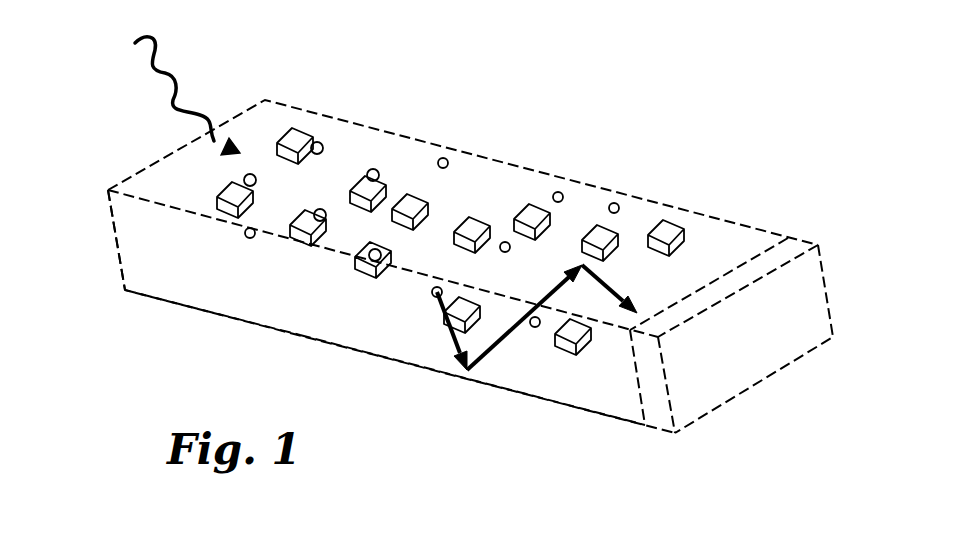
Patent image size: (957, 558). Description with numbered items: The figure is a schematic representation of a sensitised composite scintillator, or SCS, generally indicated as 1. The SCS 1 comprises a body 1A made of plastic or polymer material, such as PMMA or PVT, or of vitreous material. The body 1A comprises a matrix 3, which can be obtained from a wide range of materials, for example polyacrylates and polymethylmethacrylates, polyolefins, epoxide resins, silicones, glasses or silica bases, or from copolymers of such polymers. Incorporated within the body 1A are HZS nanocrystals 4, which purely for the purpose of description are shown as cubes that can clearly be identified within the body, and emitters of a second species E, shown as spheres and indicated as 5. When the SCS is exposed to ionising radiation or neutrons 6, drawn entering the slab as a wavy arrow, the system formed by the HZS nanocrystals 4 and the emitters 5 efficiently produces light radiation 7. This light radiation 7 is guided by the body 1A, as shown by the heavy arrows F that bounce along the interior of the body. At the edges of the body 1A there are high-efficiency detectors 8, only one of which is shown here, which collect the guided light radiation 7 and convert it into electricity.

The sensitised composite scintillator 1 is at (835, 222).
The body 1A is at (98, 190).
The matrix 3 is at (148, 258).
The HZS nanocrystals 4 is at (293, 137).
The emitters E 5 is at (443, 158).
The ionising radiation or neutrons 6 is at (182, 71).
The light radiation 7 is at (587, 395).
The high-efficiency detectors 8 is at (698, 387).
The arrows F is at (620, 287).